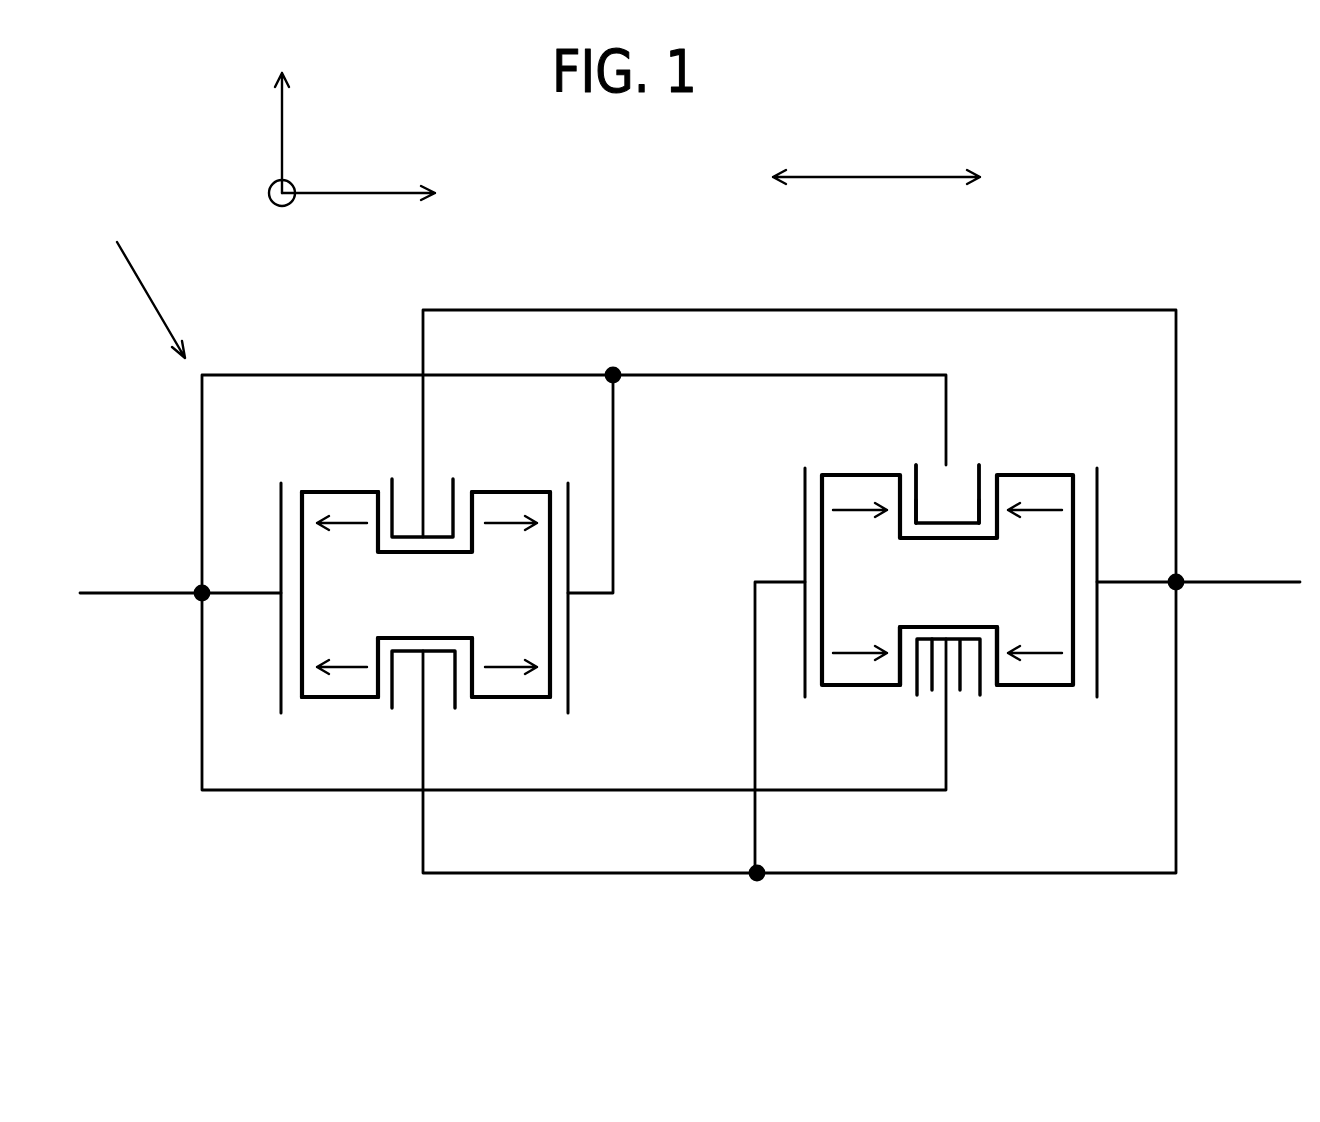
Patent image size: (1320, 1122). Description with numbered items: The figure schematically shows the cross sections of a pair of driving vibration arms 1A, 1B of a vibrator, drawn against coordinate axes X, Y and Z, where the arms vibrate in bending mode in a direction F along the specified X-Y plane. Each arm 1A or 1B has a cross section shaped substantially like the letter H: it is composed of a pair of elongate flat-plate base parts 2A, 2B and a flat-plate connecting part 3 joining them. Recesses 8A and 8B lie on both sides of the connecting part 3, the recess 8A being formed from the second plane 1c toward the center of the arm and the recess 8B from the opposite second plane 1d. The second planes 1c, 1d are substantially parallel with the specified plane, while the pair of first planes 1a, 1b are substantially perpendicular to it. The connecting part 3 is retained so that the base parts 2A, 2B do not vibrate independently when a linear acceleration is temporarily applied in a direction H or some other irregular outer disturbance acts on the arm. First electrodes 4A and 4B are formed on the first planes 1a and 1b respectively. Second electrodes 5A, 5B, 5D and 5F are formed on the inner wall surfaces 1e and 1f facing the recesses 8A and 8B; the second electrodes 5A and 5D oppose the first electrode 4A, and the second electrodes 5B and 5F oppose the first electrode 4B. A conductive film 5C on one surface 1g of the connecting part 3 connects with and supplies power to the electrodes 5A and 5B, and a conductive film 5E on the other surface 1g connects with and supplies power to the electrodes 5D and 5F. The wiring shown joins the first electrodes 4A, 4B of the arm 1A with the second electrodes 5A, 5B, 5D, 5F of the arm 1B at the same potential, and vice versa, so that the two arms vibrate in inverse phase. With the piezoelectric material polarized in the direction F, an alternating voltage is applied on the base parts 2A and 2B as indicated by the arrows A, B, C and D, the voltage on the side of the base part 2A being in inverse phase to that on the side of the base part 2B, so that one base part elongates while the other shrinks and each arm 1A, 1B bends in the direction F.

The driving vibration arm 1A is at (498, 456).
The driving vibration arm 1B is at (1049, 445).
The first plane 1a is at (292, 524).
The first plane 1b is at (552, 542).
The second plane 1c is at (358, 491).
The second plane 1d is at (327, 698).
The inner wall surface 1e is at (900, 495).
The inner wall surface 1f is at (997, 497).
The surface of connecting part 1g is at (930, 677).
The base part 2A is at (320, 513).
The base part 2B is at (525, 490).
The connecting part 3 is at (402, 630).
The recess 8A is at (448, 517).
The recess 8B is at (467, 672).
The first electrode 4A is at (803, 508).
The first electrode 4B is at (1099, 526).
The second electrode 5A is at (912, 520).
The second electrode 5B is at (983, 512).
The conductive film 5C is at (950, 510).
The second electrode 5D is at (912, 665).
The conductive film 5E is at (960, 678).
The second electrode 5F is at (984, 667).
The arrow A is at (357, 527).
The arrow B is at (508, 670).
The arrow C is at (850, 655).
The arrow D is at (1053, 660).
The direction H is at (150, 295).
The direction F is at (862, 177).
The X axis X is at (373, 191).
The Y axis Y is at (282, 215).
The Z axis Z is at (268, 126).